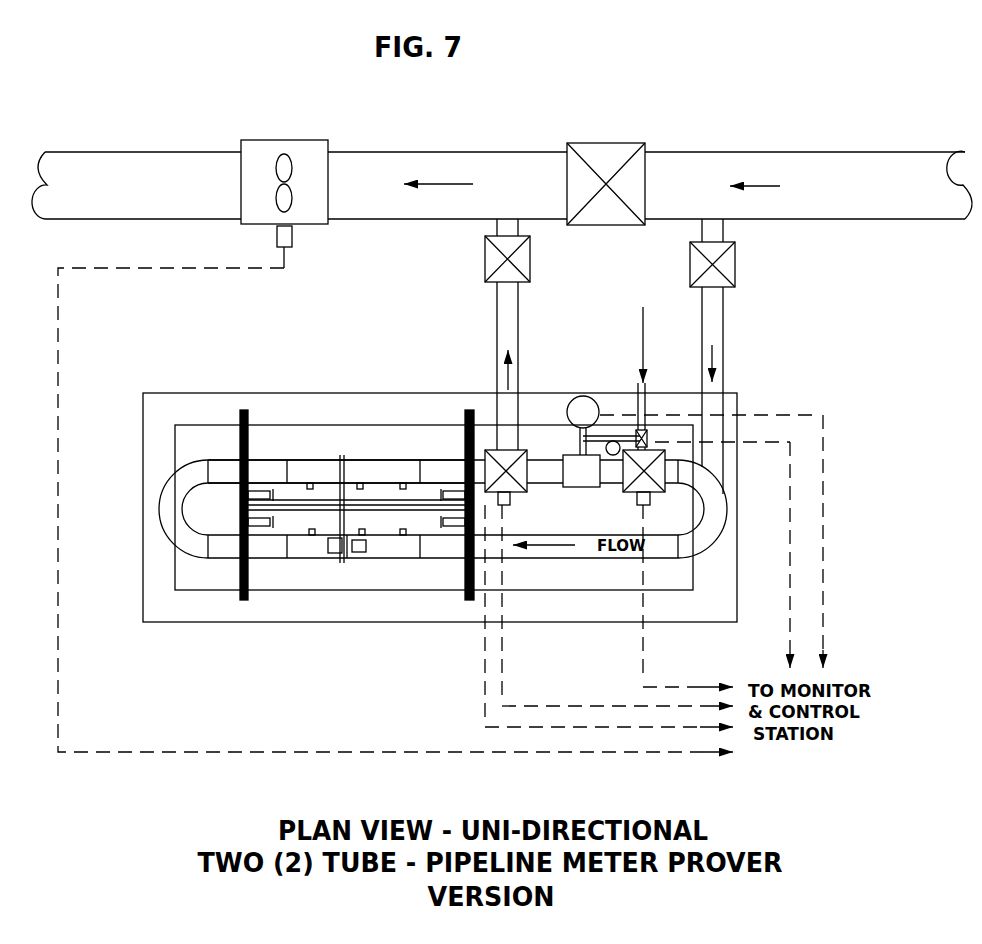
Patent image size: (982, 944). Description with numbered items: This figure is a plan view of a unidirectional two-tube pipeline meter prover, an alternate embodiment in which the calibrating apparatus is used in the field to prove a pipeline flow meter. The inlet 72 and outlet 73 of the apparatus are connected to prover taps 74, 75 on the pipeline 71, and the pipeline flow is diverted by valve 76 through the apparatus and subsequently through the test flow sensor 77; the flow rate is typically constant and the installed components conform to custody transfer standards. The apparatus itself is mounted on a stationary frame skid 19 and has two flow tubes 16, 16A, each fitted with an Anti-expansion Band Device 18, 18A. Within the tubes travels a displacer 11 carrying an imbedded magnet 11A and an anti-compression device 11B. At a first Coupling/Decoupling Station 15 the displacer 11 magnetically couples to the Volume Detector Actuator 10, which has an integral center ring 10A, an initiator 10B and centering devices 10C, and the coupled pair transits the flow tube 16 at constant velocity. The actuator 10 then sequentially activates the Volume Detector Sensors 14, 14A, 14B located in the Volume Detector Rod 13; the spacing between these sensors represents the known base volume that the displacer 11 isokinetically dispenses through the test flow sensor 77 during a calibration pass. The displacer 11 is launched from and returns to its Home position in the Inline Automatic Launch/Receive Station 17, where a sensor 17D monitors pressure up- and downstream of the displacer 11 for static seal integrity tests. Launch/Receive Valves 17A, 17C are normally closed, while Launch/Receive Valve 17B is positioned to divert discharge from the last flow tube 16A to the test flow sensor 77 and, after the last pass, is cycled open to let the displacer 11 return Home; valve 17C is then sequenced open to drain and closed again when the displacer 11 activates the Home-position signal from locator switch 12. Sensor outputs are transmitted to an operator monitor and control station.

The pipeline 71 is at (838, 152).
The inlet 72 is at (725, 333).
The outlet 73 is at (498, 324).
The prover tap 74 is at (518, 229).
The prover tap 75 is at (705, 231).
The valve 76 is at (612, 148).
The test flow sensor 77 is at (258, 138).
The Volume Detector Actuator 10 is at (339, 554).
The integral center ring 10A is at (311, 602).
The initiator 10B is at (348, 603).
The centering devices 10C is at (270, 699).
The displacer 11 is at (228, 575).
The imbedded magnet 11A is at (267, 575).
The anti-compression device 11B is at (321, 541).
The locator switch 12 is at (613, 440).
The Volume Detector Rod 13 is at (432, 520).
The Volume Detector Sensor 14 is at (421, 503).
The Volume Detector Sensor 14A is at (356, 502).
The Volume Detector Sensor 14B is at (293, 503).
The Coupling/Decoupling Station 15 is at (460, 478).
The flow tube 16 is at (208, 530).
The flow tube 16A is at (222, 470).
The Inline Automatic Launch/Receive Station 17 is at (585, 490).
The Launch/Receive Valve 17A is at (644, 506).
The Launch/Receive Valve 17B is at (506, 506).
The Launch/Receive Valve 17C is at (646, 430).
The sensor 17D is at (583, 395).
The Anti-expansion Band Device 18 is at (392, 558).
The Anti-expansion Band Device 18A is at (290, 457).
The stationary frame skid 19 is at (260, 410).